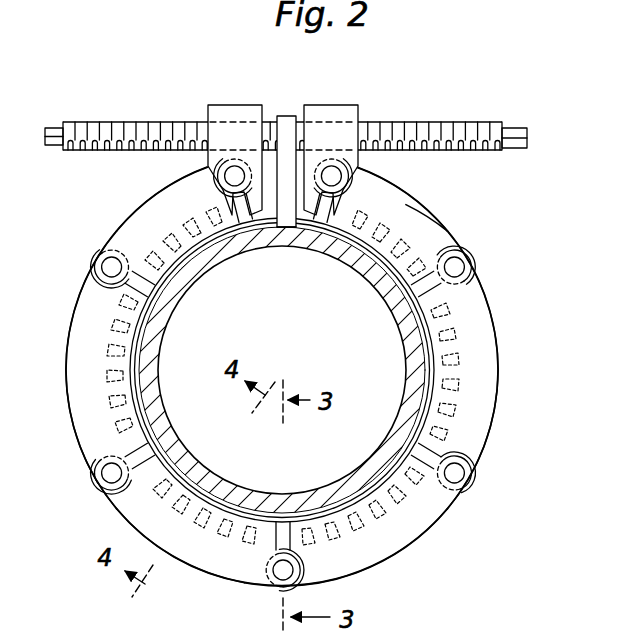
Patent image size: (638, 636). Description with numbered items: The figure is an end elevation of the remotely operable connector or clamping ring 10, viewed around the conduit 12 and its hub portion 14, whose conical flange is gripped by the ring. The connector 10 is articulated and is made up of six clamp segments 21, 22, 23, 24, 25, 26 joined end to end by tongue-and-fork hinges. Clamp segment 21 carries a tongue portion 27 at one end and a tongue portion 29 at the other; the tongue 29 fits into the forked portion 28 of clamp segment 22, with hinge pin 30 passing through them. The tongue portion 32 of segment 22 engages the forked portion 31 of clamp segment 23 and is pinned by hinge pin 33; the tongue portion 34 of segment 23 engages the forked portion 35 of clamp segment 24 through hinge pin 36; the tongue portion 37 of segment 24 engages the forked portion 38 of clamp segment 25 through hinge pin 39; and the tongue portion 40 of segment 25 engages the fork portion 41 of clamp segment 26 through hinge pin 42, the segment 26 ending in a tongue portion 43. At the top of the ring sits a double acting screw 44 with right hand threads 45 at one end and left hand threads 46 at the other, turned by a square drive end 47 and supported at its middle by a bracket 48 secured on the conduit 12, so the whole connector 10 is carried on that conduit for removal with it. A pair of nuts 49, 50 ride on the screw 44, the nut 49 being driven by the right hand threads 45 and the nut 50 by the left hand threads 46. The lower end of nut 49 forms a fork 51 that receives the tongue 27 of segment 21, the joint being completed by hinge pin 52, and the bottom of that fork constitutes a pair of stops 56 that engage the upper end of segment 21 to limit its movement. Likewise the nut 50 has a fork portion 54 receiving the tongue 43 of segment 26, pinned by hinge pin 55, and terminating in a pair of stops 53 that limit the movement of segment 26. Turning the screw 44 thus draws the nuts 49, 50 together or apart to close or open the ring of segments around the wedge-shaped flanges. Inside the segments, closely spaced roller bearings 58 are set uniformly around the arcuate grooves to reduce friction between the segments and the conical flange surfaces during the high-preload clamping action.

The connector or clamping ring 10 is at (498, 218).
The conduit 12 is at (410, 336).
The hub portion 14 is at (404, 352).
The clamp segment 21 is at (438, 220).
The clamp segment 22 is at (501, 359).
The clamp segment 23 is at (396, 563).
The clamp segment 24 is at (206, 573).
The clamp segment 25 is at (72, 364).
The clamp segment 26 is at (136, 222).
The tongue portion 27 is at (402, 205).
The forked portion 28 is at (472, 270).
The tongue portion 29 is at (452, 241).
The hinge pin 30 is at (472, 282).
The forked portion 31 is at (471, 486).
The tongue portion 32 is at (471, 456).
The hinge pin 33 is at (471, 470).
The tongue portion 34 is at (306, 572).
The forked portion 35 is at (280, 591).
The hinge pin 36 is at (279, 573).
The tongue portion 37 is at (110, 497).
The forked portion 38 is at (101, 478).
The hinge pin 39 is at (102, 468).
The tongue portion 40 is at (92, 280).
The fork portion 41 is at (110, 252).
The hinge pin 42 is at (104, 265).
The tongue portion 43 is at (218, 192).
The double acting screw 44 is at (505, 128).
The right hand threads 45 is at (440, 122).
The left hand threads 46 is at (125, 122).
The square drive end 47 is at (48, 128).
The bracket 48 is at (287, 116).
The nut 49 is at (345, 105).
The nut 50 is at (222, 105).
The fork 51 is at (362, 164).
The hinge pin 52 is at (348, 186).
The stops 53 is at (262, 224).
The fork portion 54 is at (213, 180).
The hinge pin 55 is at (236, 166).
The stops 56 is at (295, 228).
The roller bearings 58 is at (331, 500).